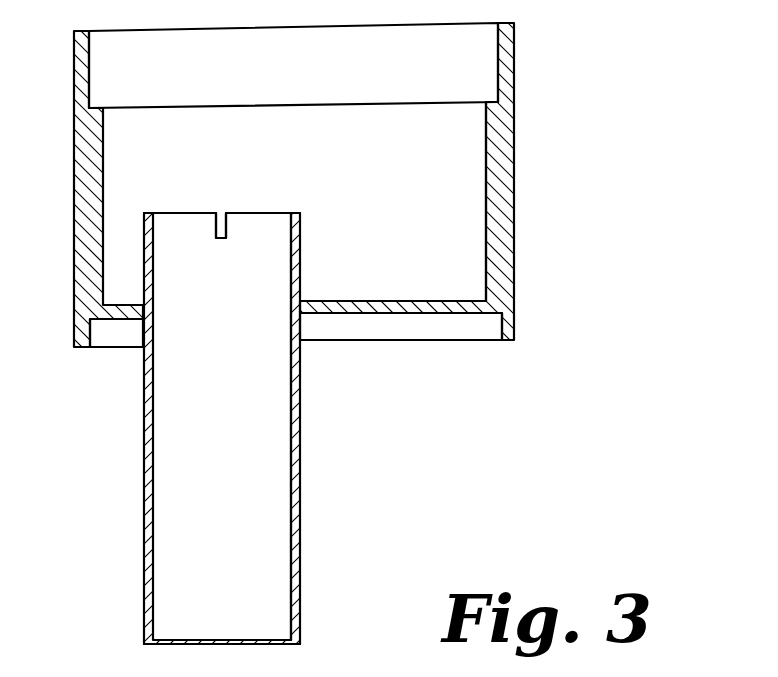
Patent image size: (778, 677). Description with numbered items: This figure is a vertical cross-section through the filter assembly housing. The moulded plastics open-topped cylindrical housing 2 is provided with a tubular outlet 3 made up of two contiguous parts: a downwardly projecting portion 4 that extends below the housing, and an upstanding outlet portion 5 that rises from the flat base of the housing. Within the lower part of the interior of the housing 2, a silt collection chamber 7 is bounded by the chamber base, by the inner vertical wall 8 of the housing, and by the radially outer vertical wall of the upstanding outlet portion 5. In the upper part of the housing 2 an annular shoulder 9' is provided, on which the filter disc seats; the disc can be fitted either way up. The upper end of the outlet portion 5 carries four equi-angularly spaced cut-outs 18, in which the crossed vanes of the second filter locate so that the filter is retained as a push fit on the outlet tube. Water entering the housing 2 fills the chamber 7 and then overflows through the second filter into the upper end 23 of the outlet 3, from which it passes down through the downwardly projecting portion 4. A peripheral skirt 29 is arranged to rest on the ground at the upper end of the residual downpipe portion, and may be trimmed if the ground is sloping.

The housing 2 is at (520, 260).
The tubular outlet 3 is at (310, 492).
The downwardly projecting portion 4 is at (302, 582).
The upstanding outlet portion 5 is at (298, 260).
The silt collection chamber 7 is at (383, 278).
The inner vertical wall 8 is at (490, 180).
The annular shoulder 9' is at (293, 65).
The cut-outs 18 is at (152, 228).
The upper end of outlet 23 is at (270, 220).
The peripheral skirt 29 is at (517, 328).